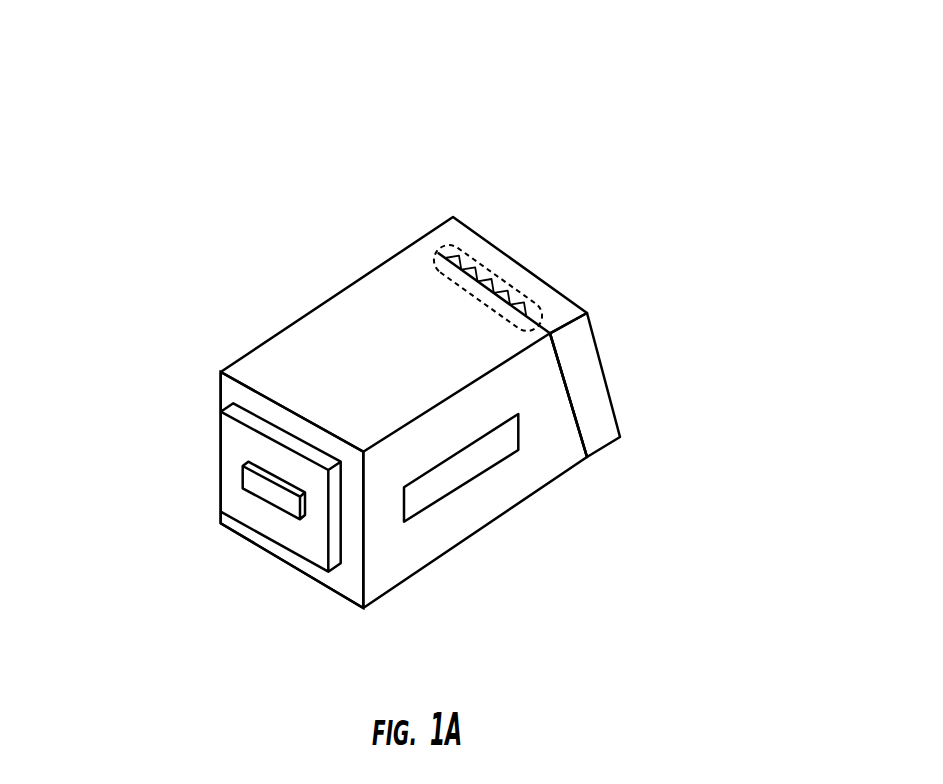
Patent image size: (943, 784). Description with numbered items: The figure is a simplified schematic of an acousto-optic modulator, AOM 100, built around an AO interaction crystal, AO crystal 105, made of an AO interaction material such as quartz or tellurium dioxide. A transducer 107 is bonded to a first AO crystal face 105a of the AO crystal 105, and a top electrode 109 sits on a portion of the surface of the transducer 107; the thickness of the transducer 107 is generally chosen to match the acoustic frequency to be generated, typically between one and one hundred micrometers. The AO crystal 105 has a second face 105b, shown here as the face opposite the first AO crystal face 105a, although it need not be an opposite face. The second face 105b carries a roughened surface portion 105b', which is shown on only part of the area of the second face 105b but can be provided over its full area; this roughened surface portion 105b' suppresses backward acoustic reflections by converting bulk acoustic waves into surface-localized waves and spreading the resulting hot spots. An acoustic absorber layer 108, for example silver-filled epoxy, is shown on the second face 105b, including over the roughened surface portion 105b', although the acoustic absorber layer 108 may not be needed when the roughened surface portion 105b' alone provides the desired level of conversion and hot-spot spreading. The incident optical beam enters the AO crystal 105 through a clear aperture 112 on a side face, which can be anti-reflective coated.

The AO modulator 100 is at (528, 137).
The AO interaction crystal 105 is at (327, 338).
The first AO crystal face 105a is at (352, 585).
The second face 105b is at (591, 424).
The roughened surface portion 105b' is at (547, 266).
The transducer 107 is at (233, 427).
The acoustic absorber layer 108 is at (592, 393).
The top electrode 109 is at (288, 502).
The clear aperture 112 is at (468, 465).